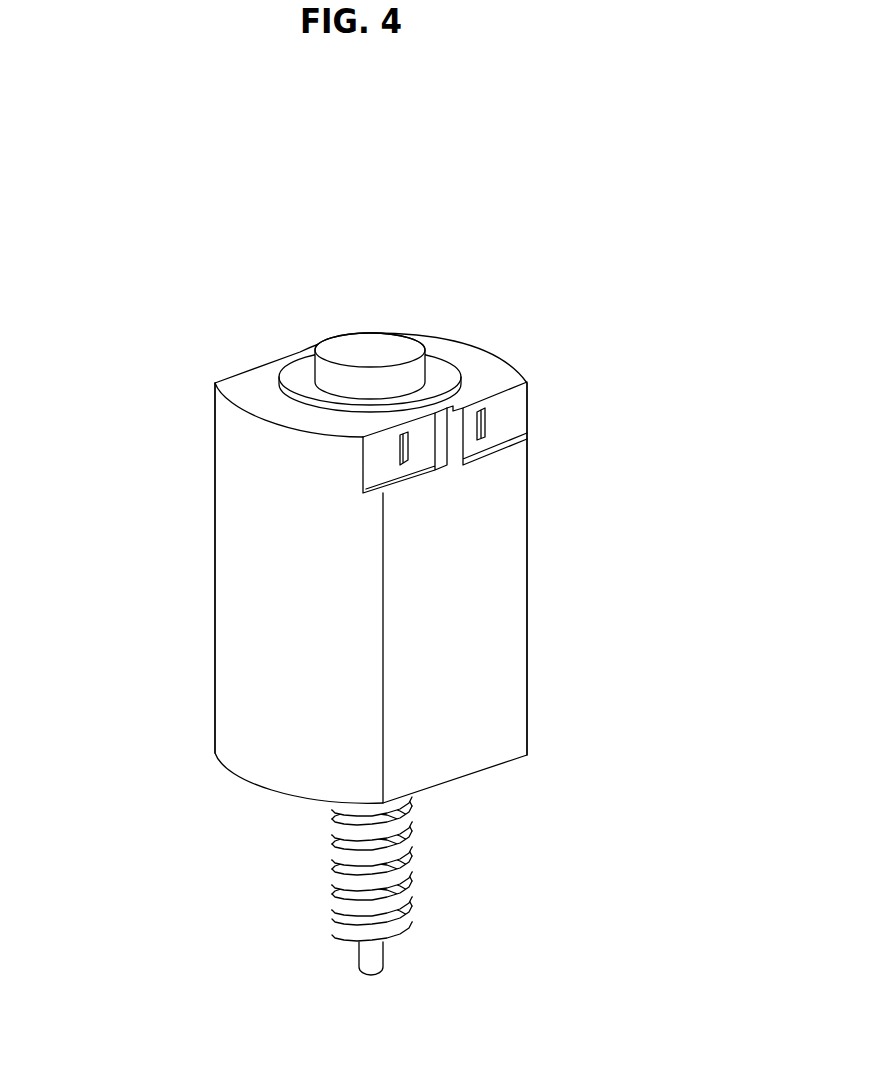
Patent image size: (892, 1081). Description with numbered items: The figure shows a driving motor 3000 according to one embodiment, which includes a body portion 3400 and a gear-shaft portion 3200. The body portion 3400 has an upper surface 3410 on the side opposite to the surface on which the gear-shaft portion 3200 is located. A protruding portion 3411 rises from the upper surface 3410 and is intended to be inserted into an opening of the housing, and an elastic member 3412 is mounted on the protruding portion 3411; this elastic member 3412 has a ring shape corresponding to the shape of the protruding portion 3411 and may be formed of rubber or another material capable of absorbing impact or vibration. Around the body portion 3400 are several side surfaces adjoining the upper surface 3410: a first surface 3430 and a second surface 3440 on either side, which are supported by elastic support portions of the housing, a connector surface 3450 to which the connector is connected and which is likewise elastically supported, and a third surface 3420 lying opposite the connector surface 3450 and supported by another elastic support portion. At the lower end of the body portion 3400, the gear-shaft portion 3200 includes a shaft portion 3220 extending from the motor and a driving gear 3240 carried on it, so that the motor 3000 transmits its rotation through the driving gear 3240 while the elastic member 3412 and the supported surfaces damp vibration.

The driving motor 3000 is at (390, 102).
The gear-shaft portion 3200 is at (446, 885).
The shaft portion 3220 is at (375, 958).
The driving gear 3240 is at (412, 820).
The body portion 3400 is at (370, 518).
The upper surface 3410 is at (360, 322).
The protruding portion 3411 is at (375, 347).
The elastic member 3412 is at (302, 377).
The third surface 3420 is at (215, 463).
The first surface 3430 is at (255, 598).
The second surface 3440 is at (527, 498).
The connector surface 3450 is at (497, 580).